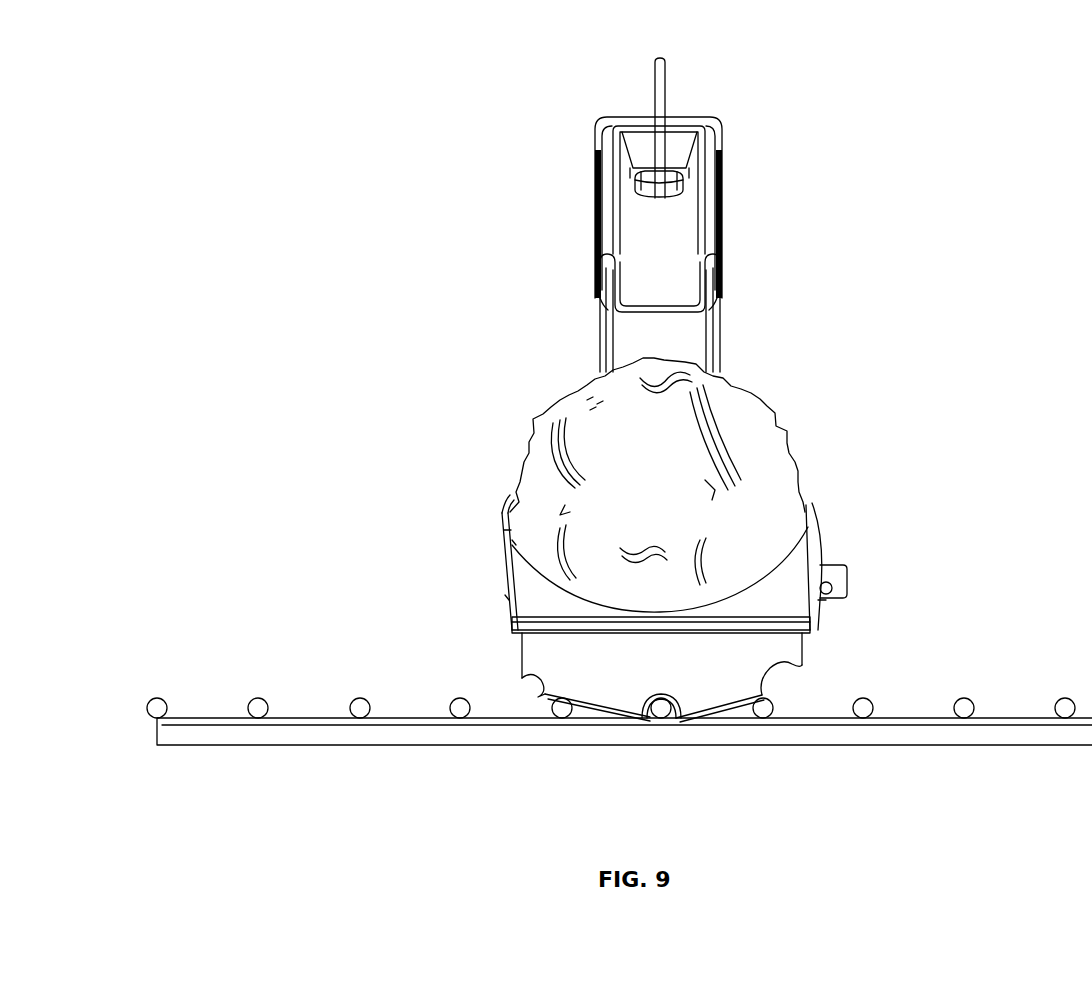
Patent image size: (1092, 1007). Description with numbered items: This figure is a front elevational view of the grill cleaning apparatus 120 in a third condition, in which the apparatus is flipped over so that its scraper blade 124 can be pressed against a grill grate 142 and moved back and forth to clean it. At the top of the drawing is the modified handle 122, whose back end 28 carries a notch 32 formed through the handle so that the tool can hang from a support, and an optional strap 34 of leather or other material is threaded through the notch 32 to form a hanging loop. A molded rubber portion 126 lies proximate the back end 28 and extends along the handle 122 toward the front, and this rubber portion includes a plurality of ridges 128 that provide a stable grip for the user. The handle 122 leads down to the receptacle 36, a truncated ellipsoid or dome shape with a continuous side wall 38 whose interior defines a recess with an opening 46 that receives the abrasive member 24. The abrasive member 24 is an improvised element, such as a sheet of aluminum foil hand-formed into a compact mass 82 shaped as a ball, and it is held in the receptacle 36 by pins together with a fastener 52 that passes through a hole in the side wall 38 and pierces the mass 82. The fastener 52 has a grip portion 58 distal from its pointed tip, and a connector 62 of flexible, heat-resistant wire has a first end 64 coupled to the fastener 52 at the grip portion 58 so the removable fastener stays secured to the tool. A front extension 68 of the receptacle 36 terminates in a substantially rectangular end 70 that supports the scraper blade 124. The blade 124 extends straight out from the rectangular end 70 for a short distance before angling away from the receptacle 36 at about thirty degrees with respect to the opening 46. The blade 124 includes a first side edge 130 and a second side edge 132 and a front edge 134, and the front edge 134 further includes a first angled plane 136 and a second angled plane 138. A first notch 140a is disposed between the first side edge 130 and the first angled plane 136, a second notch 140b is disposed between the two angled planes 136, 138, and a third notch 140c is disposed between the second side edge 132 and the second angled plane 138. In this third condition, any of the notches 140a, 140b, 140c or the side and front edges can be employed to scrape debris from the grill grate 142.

The grill cleaning apparatus 120 is at (459, 92).
The strap 34 is at (655, 78).
The notch 32 is at (650, 176).
The back end 28 is at (700, 118).
The molded rubber portion 126 is at (722, 144).
The ridges 128 is at (592, 196).
The handle 122 is at (722, 325).
The abrasive member 24 is at (742, 379).
The compact mass 82 is at (543, 441).
The receptacle 36 is at (500, 500).
The side wall 38 is at (504, 530).
The opening 46 is at (506, 541).
The front extension 68 is at (506, 596).
The connector 62 is at (823, 531).
The fastener 52 is at (853, 578).
The grip portion 58 is at (848, 590).
The first end 64 is at (828, 596).
The rectangular end 70 is at (683, 613).
The first side edge 130 is at (521, 656).
The second side edge 132 is at (805, 648).
The first notch 140a is at (523, 692).
The second notch 140b is at (675, 722).
The third notch 140c is at (781, 672).
The first angled plane 136 is at (575, 720).
The front edge 134 is at (598, 718).
The grill grate 142 is at (659, 720).
The second angled plane 138 is at (751, 718).
The scraper blade 124 is at (712, 722).